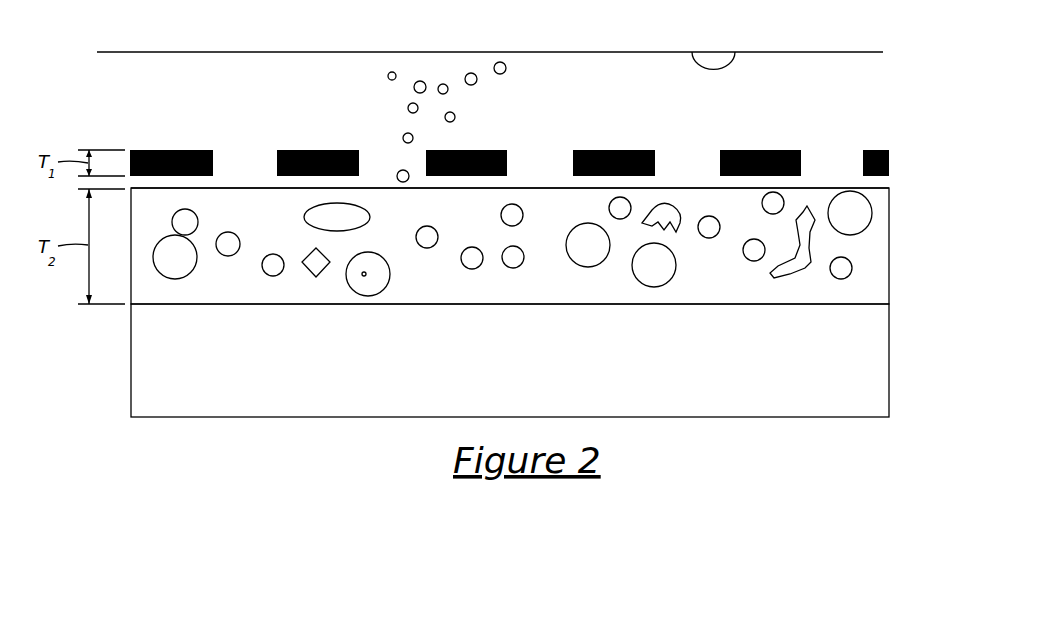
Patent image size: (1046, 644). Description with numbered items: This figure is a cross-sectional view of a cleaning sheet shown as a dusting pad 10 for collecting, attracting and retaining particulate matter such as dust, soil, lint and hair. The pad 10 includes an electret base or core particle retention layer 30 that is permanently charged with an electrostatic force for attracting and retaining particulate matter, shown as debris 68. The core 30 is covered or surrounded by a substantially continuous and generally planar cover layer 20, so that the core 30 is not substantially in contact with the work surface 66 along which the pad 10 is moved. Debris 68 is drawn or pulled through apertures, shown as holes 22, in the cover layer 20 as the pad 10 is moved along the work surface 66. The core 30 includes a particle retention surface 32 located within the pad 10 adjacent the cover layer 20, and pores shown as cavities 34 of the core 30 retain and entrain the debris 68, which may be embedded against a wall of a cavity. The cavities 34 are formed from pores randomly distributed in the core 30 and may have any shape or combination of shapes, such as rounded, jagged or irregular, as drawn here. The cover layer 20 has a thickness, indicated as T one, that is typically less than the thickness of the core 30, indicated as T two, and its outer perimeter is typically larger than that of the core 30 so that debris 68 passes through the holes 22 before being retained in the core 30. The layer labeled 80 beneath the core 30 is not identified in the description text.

The dusting pad 10 is at (876, 108).
The cover layer 20 is at (178, 146).
The holes 22 is at (242, 165).
The particle retention layer 30 is at (124, 313).
The particle retention surface 32 is at (533, 188).
The cavities 34 is at (306, 252).
The work surface 66 is at (697, 58).
The debris 68 is at (505, 72).
The base layer 80 is at (131, 375).